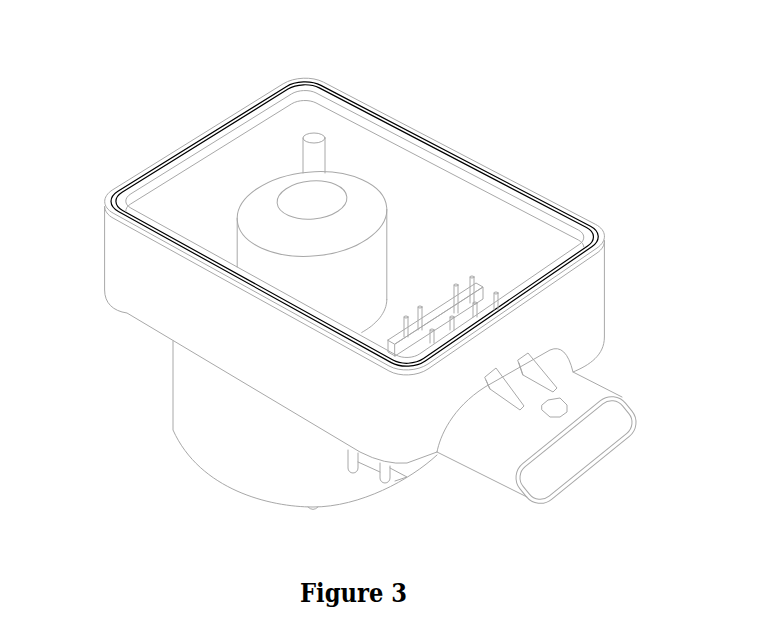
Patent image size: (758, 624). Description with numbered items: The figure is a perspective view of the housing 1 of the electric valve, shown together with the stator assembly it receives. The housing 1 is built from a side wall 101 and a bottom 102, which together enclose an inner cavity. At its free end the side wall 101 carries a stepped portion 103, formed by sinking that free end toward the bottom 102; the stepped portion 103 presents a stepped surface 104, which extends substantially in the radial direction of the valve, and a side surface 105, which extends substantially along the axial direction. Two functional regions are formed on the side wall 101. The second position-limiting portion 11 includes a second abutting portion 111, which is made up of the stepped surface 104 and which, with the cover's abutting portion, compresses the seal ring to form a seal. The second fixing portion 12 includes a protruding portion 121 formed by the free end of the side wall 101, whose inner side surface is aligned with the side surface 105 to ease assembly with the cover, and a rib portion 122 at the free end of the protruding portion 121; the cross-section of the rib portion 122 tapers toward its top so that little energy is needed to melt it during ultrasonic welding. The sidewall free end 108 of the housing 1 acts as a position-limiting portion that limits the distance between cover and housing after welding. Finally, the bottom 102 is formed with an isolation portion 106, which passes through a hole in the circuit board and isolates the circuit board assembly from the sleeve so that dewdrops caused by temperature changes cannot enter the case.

The housing 1 is at (335, 259).
The second position-limiting portion 11 is at (323, 236).
The second fixing portion 12 is at (352, 369).
The side wall 101 is at (352, 404).
The bottom 102 is at (491, 202).
The stepped portion 103 is at (354, 189).
The stepped surface 104 is at (355, 289).
The side surface 105 is at (355, 183).
The isolation portion 106 is at (356, 180).
The sidewall free end 108 is at (316, 291).
The second abutting portion 111 is at (373, 174).
The protruding portion 121 is at (319, 224).
The rib portion 122 is at (315, 224).